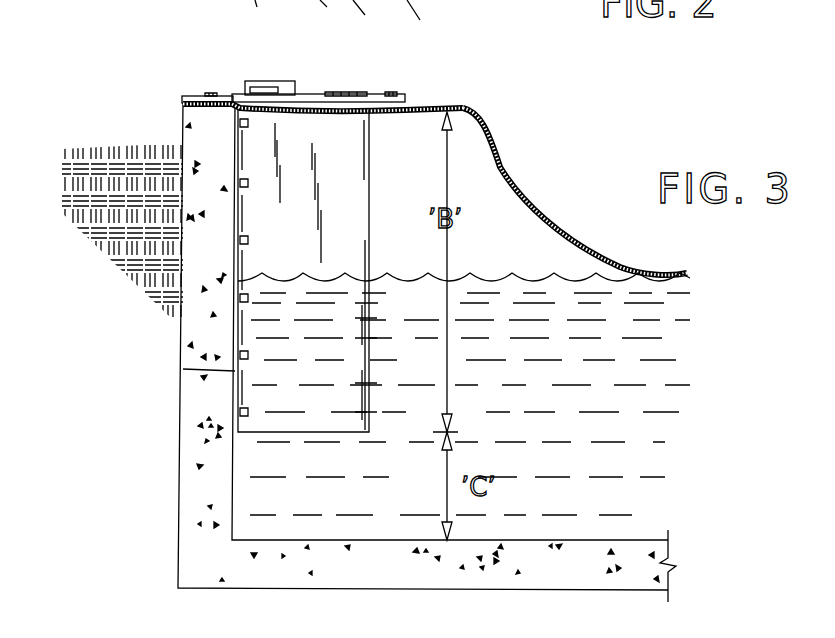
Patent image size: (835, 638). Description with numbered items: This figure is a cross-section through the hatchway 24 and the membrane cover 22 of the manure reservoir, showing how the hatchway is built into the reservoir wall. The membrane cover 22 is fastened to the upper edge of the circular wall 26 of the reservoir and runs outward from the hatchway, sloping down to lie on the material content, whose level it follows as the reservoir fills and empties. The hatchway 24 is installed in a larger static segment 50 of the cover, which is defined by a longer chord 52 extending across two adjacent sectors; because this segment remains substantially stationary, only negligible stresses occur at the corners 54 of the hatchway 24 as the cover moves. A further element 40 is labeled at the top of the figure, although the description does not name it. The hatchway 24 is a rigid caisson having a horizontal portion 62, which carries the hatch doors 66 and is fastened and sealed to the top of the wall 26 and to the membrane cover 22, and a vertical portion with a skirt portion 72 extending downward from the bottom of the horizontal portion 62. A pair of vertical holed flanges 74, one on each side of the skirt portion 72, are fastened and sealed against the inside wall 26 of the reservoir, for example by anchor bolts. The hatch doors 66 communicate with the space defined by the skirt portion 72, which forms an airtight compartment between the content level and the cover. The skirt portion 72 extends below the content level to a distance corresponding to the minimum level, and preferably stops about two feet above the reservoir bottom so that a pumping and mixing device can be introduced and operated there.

In FIG. 3, the membrane cover 22 is at (516, 183).
In FIG. 3, the hatchway 24 is at (189, 48).
In FIG. 3, the circular wall 26 is at (183, 123).
In FIG. 2, the cover 40 is at (449, 8).
In FIG. 2, the larger static segment 50 is at (252, 25).
In FIG. 3, the longer chord 52 is at (462, 108).
In FIG. 3, the corners of the hatchway 54 is at (401, 103).
In FIG. 3, the horizontal portion 62 is at (197, 95).
In FIG. 3, the hatch doors 66 is at (313, 95).
In FIG. 3, the skirt portion 72 is at (280, 226).
In FIG. 3, the vertical holed flanges 74 is at (240, 372).